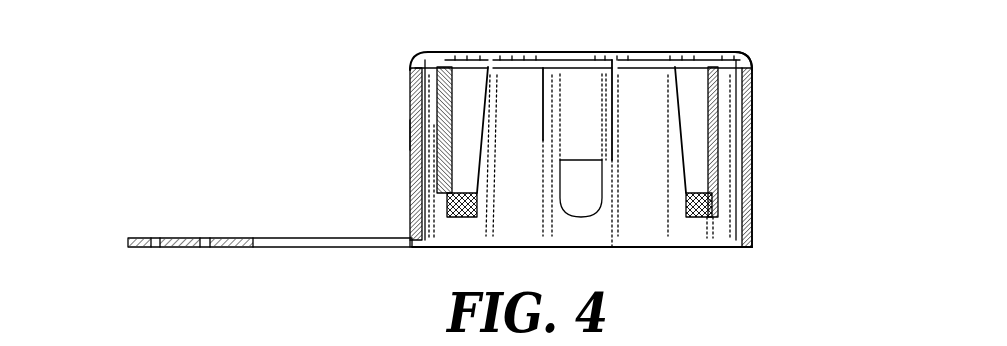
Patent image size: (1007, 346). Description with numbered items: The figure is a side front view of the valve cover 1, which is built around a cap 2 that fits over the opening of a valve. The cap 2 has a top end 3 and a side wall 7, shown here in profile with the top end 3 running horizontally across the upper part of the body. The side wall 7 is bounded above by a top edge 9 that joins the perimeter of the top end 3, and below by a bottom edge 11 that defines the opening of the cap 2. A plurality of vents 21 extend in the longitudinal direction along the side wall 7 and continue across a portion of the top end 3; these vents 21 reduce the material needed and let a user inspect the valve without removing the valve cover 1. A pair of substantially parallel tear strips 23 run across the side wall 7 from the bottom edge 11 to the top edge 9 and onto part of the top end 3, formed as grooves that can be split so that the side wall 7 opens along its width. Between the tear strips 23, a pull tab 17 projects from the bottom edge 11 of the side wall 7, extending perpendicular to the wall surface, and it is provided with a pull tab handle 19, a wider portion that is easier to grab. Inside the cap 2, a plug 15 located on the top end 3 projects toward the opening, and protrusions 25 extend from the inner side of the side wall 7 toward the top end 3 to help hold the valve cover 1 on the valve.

The valve cover 1 is at (242, 62).
The cap 2 is at (762, 111).
The top end 3 is at (652, 52).
The side wall 7 is at (737, 187).
The top edge 9 is at (744, 62).
The bottom edge 11 is at (742, 252).
The plug 15 is at (598, 78).
The pull tab 17 is at (283, 267).
The pull tab handle 19 is at (162, 239).
The vents 21 is at (713, 124).
The tear strips 23 is at (410, 88).
The protrusions 25 is at (470, 208).